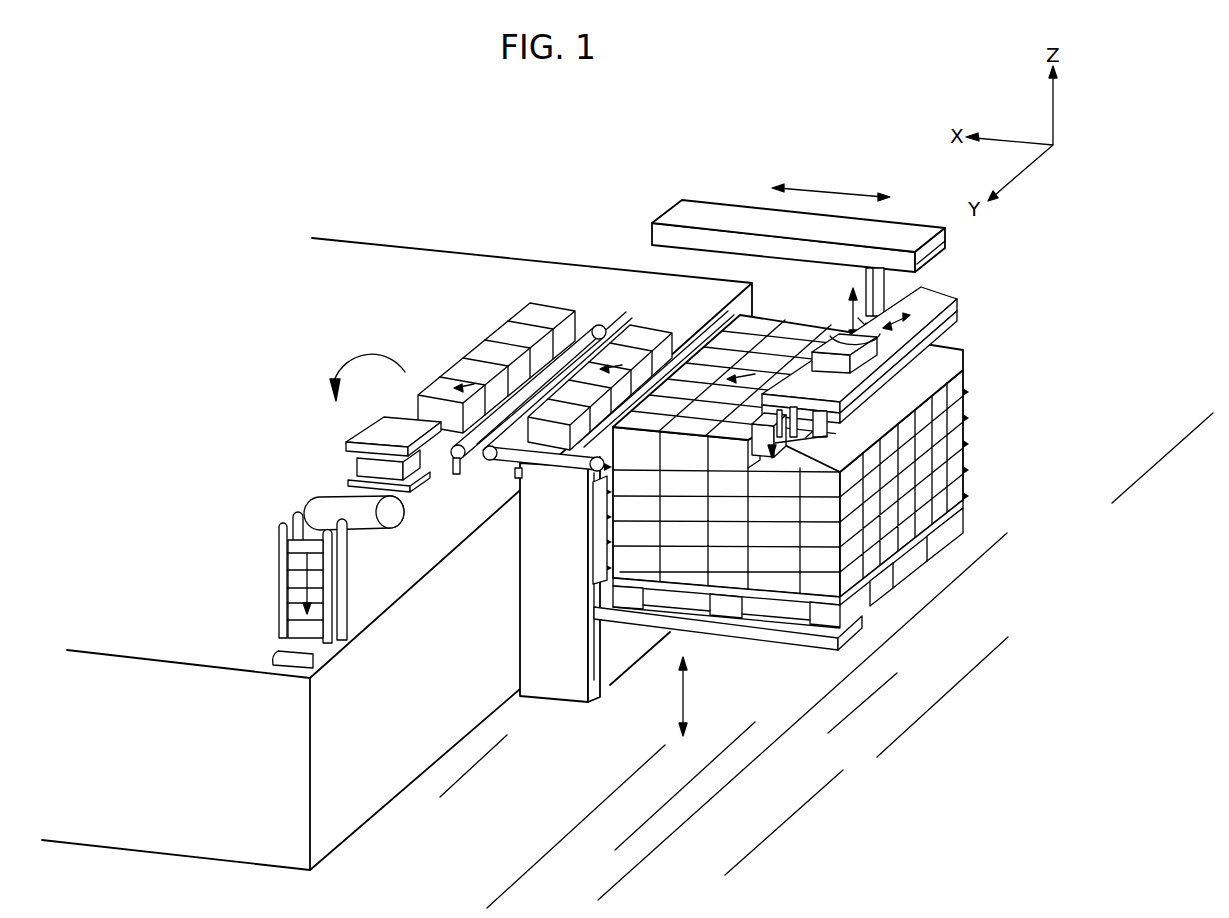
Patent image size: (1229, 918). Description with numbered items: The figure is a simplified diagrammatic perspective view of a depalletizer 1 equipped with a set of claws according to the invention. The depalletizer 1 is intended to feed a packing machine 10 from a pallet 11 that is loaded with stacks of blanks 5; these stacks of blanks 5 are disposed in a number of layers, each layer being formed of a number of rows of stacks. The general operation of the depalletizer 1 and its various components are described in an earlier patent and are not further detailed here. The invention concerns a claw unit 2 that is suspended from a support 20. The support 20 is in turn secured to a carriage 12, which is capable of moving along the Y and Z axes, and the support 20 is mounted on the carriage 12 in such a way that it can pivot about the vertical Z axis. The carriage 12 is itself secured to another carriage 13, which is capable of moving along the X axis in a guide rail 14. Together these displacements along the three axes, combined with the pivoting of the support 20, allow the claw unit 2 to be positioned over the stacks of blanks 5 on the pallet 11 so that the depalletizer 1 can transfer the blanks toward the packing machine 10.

The depalletizer 1 is at (548, 598).
The claw unit 2 is at (912, 370).
The stacks of blanks 5 is at (963, 388).
The packing machine 10 is at (326, 652).
The pallet 11 is at (958, 518).
The carriage 12 is at (920, 286).
The carriage 13 is at (864, 283).
The guide rail 14 is at (707, 215).
The support 20 is at (957, 301).